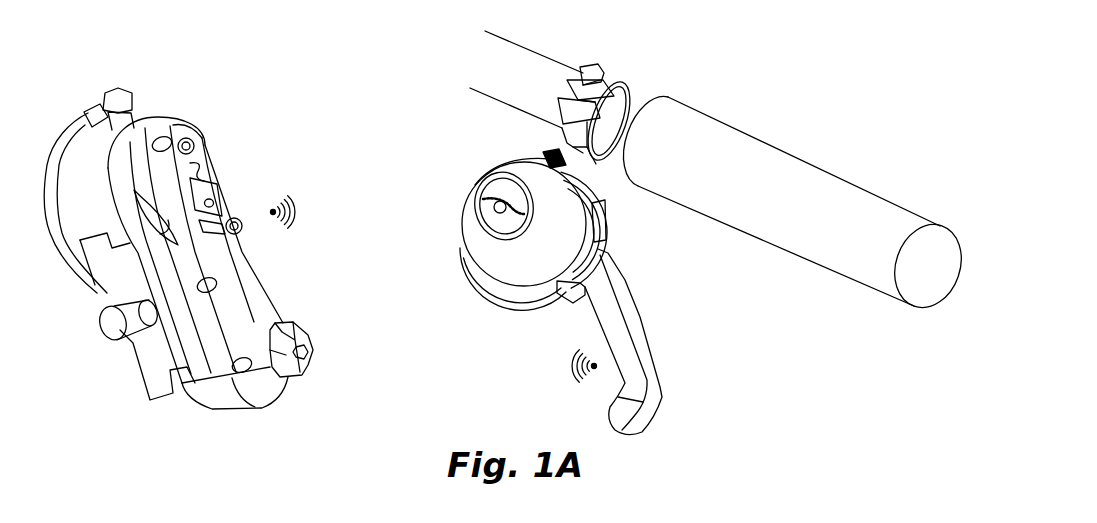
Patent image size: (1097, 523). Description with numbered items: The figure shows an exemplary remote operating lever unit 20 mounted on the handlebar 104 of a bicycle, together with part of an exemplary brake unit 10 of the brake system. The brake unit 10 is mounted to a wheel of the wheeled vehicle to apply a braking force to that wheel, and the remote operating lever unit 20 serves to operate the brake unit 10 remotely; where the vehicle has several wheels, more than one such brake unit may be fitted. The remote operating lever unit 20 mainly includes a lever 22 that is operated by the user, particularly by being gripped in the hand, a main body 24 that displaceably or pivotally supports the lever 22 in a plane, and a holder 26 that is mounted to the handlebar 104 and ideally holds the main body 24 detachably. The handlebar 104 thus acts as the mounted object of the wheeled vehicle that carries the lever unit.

The brake unit 10 is at (187, 123).
The remote operating lever unit 20 is at (457, 194).
The lever 22 is at (641, 347).
The main body 24 is at (473, 238).
The holder 26 is at (593, 170).
The handlebar 104 is at (682, 123).